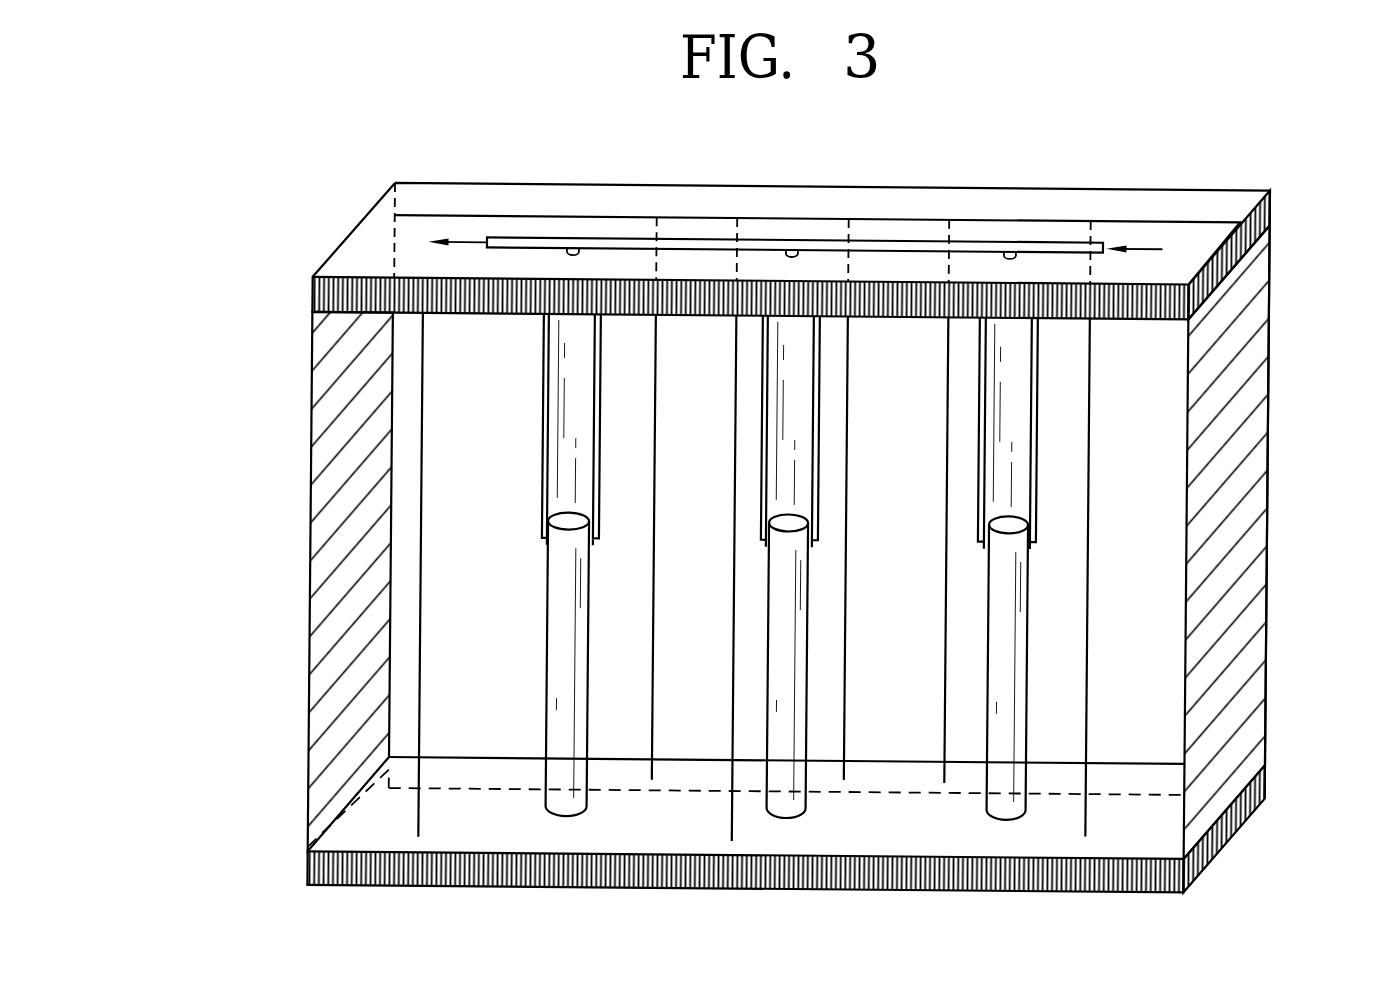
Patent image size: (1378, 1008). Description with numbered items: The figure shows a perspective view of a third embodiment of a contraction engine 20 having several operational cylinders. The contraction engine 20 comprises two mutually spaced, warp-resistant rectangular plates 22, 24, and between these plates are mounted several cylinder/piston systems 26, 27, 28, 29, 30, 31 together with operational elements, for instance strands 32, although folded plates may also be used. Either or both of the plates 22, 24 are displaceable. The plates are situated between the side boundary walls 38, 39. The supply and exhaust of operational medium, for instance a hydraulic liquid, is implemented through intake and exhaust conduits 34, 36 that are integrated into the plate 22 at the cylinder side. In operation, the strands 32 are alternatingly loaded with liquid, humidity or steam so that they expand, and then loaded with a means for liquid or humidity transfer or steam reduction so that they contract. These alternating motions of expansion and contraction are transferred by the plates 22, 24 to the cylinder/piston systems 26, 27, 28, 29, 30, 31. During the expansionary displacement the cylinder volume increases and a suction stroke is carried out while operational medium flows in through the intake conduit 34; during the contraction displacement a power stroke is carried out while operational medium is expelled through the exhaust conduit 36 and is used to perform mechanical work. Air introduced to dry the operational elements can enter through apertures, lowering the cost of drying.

The contraction engine 20 is at (248, 459).
The rectangular plate 22 is at (356, 237).
The rectangular plate 24 is at (1220, 851).
The cylinder/piston system 26 is at (594, 433).
The cylinder/piston system 27 is at (573, 632).
The cylinder/piston system 28 is at (814, 435).
The cylinder/piston system 29 is at (806, 628).
The cylinder/piston system 30 is at (1037, 440).
The cylinder/piston system 31 is at (1010, 630).
The strands 32 is at (421, 672).
The intake conduit 34 is at (1057, 249).
The exhaust conduit 36 is at (510, 240).
The side boundary wall 38 is at (311, 645).
The side boundary wall 39 is at (1260, 447).